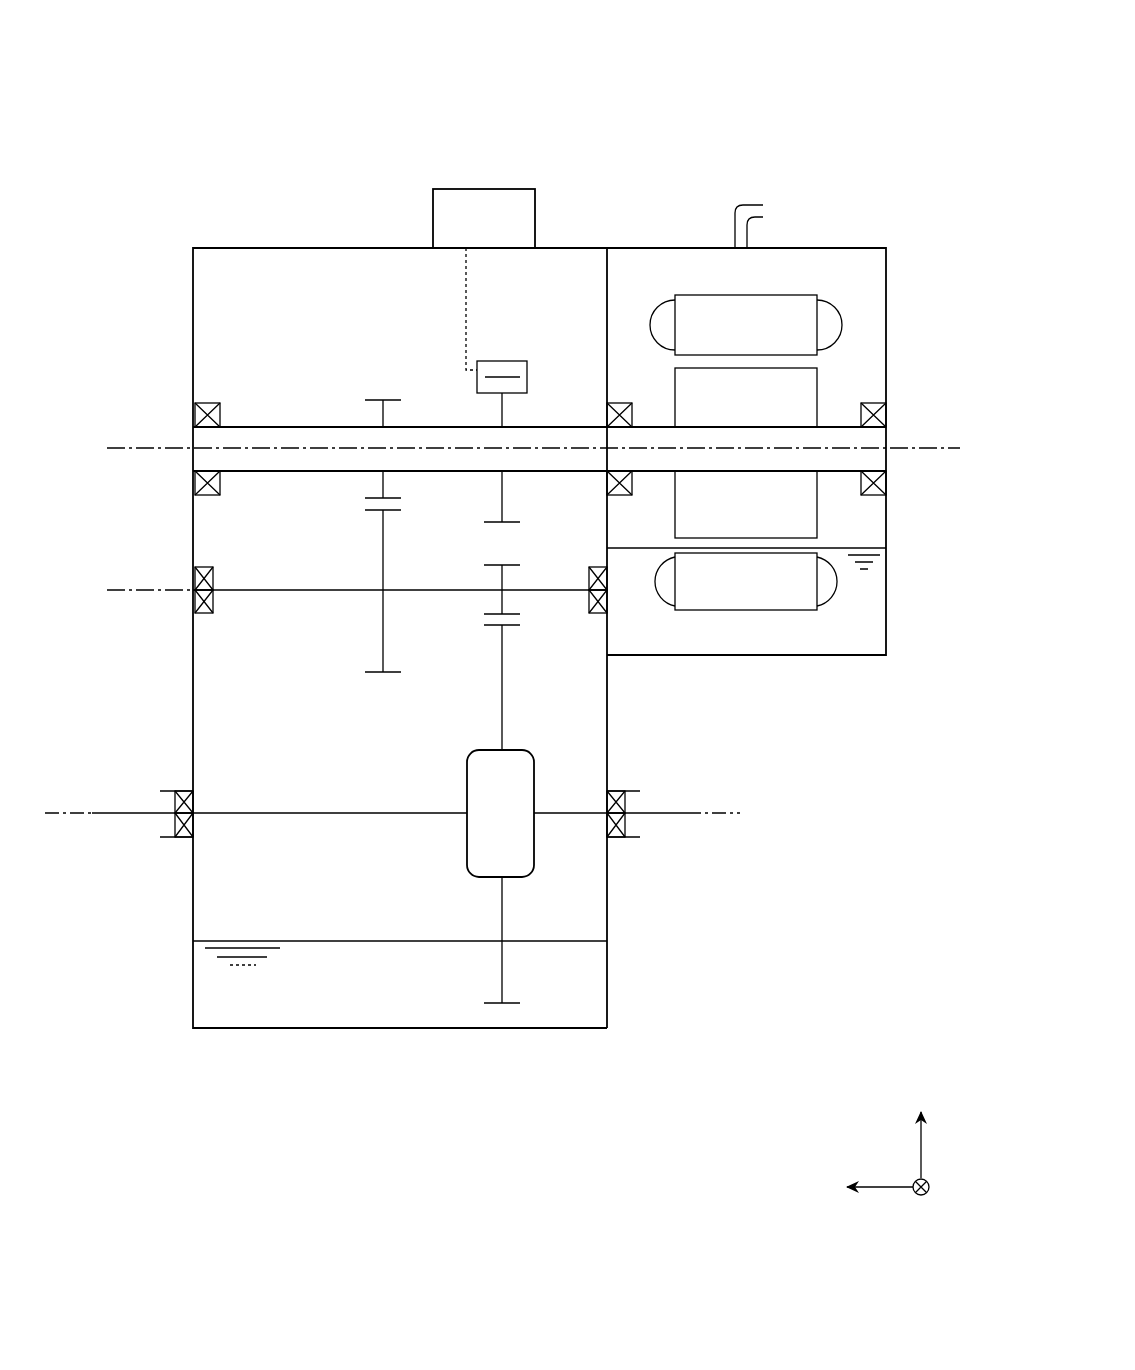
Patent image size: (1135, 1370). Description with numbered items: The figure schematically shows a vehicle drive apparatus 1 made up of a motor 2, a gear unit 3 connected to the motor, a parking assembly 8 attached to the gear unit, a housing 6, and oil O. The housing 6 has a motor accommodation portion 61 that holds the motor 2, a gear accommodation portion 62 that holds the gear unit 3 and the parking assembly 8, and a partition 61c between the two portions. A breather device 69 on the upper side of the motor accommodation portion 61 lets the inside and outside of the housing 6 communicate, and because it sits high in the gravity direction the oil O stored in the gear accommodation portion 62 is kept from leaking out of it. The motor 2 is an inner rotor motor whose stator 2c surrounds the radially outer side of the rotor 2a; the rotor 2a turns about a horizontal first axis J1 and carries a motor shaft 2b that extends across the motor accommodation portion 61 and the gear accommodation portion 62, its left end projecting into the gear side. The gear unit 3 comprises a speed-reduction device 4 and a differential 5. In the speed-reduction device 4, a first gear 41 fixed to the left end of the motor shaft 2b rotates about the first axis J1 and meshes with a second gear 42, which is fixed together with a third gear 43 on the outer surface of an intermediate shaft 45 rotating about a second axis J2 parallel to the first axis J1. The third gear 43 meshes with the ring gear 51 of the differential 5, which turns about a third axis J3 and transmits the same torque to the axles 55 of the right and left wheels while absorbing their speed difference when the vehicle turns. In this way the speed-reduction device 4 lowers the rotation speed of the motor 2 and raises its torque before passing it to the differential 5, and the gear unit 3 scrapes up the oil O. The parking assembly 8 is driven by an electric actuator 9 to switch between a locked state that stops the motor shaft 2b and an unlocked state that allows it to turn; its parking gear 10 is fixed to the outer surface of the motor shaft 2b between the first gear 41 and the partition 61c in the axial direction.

The drive apparatus 1 is at (864, 124).
The motor 2 is at (577, 523).
The rotor 2a is at (824, 505).
The motor shaft 2b is at (835, 425).
The stator 2c is at (849, 594).
The gear unit 3 is at (323, 313).
The speed-reduction device 4 is at (291, 363).
The differential 5 is at (555, 896).
The housing 6 is at (539, 560).
The parking assembly 8 is at (445, 343).
The electric actuator 9 is at (483, 189).
The parking gear 10 is at (492, 375).
The first gear 41 is at (392, 398).
The second gear 42 is at (375, 674).
The third gear 43 is at (502, 597).
The intermediate shaft 45 is at (325, 588).
The ring gear 51 is at (497, 915).
The axles 55 is at (127, 818).
The motor accommodation portion 61 is at (818, 247).
The partition 61c is at (571, 587).
The gear accommodation portion 62 is at (578, 247).
The breather device 69 is at (735, 230).
The first axis J1 is at (920, 447).
The second axis J2 is at (157, 592).
The third axis J3 is at (65, 818).
The oil O is at (270, 1008).